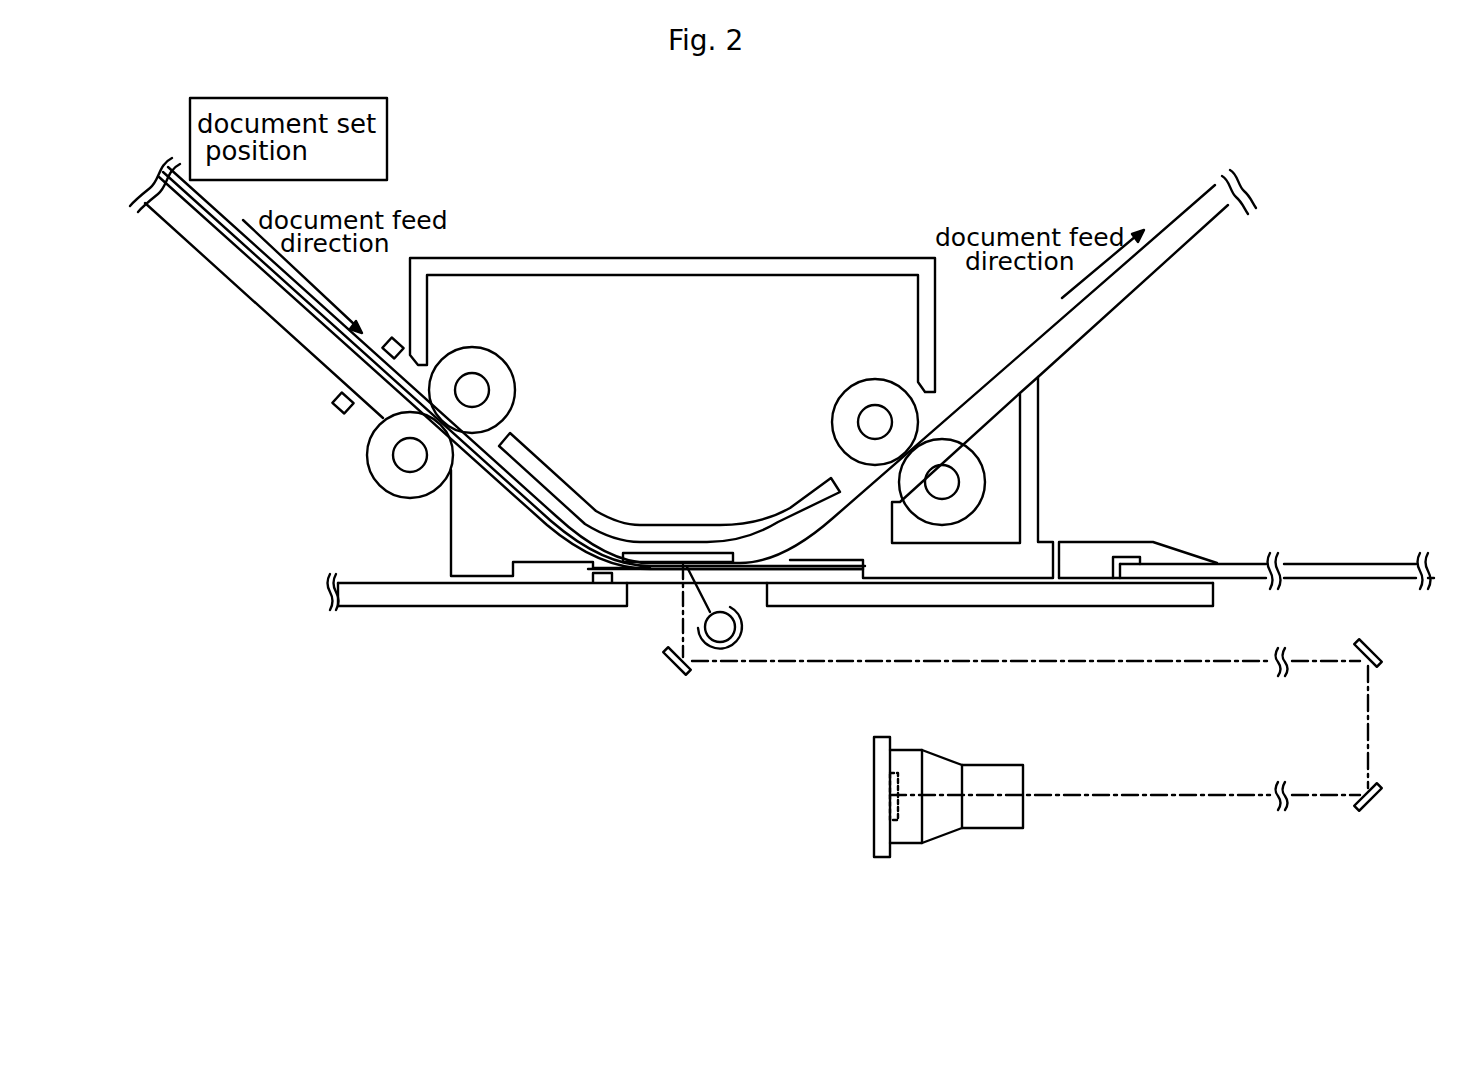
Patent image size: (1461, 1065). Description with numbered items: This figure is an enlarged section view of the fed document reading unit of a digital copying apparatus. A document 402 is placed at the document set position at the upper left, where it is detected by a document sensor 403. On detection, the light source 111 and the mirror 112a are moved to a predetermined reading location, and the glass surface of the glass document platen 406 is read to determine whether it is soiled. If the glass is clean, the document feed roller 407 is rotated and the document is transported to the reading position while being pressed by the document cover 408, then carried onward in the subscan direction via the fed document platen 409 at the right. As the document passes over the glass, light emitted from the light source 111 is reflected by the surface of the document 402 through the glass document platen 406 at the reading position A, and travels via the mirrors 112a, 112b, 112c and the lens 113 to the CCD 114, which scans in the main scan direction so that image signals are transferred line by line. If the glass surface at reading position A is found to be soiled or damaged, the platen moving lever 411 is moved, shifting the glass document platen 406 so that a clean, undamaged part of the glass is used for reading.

The document 402 is at (708, 552).
The document sensor 403 is at (383, 350).
The glass document platen 406 is at (640, 575).
The document feed roller 407 is at (440, 383).
The document cover 408 is at (654, 527).
The fed document platen 409 is at (1247, 567).
The platen moving lever 411 is at (407, 600).
The light source 111 is at (742, 625).
The mirror 112a is at (670, 667).
The mirror 112b is at (1393, 706).
The mirror 112c is at (1161, 804).
The lens 113 is at (988, 817).
The CCD 114 is at (877, 810).
The reading position A is at (682, 583).